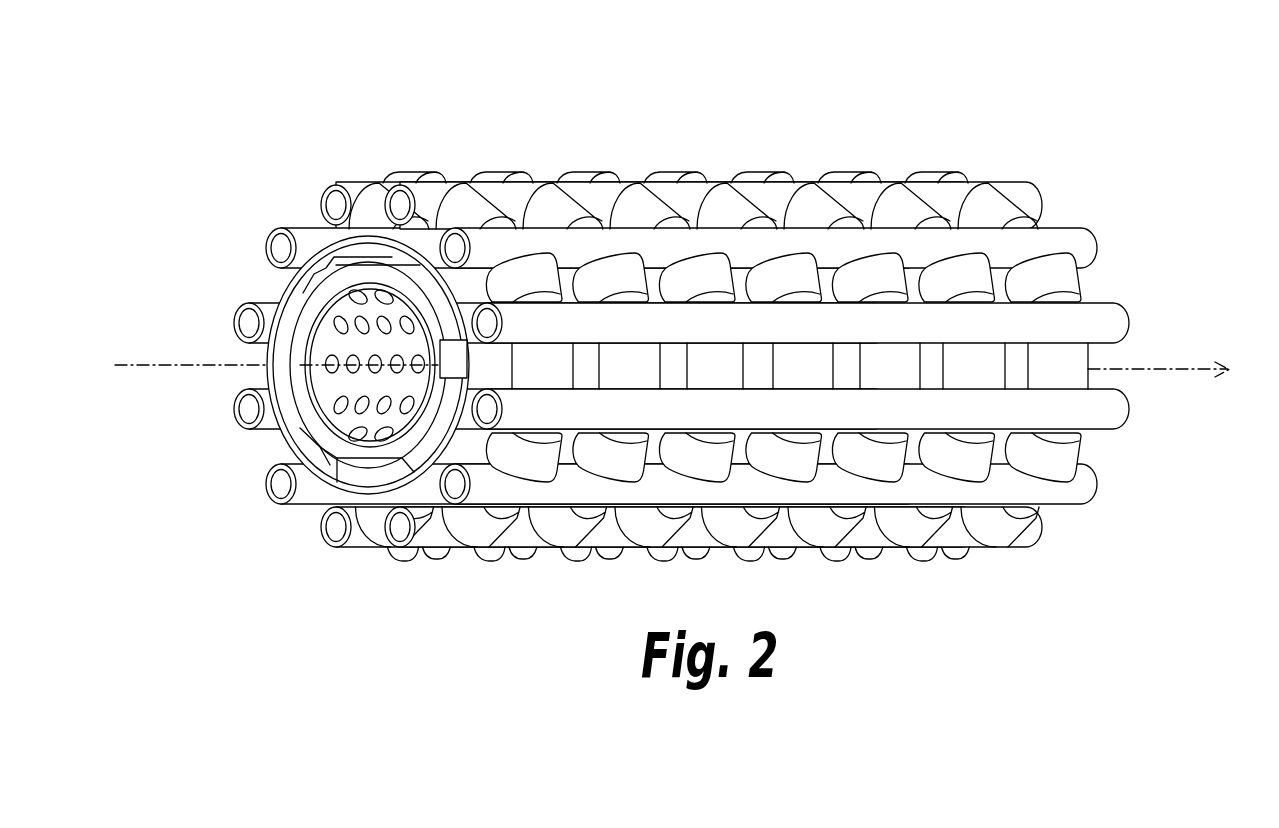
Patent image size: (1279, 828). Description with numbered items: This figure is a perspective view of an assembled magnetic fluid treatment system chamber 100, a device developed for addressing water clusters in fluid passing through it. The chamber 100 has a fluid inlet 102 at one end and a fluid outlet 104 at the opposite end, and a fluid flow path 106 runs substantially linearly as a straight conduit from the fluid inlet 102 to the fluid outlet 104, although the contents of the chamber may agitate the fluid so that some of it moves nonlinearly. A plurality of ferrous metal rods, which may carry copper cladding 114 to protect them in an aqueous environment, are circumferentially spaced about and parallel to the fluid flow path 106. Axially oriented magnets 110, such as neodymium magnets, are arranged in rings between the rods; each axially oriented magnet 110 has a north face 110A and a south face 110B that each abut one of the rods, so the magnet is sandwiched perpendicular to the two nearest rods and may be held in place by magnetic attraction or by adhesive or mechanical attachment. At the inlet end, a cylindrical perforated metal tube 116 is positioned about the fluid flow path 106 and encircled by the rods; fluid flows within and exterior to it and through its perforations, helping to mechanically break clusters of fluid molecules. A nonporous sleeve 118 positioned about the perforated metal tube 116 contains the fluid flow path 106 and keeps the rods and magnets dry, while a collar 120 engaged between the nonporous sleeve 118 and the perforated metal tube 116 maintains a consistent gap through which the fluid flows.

The magnetic fluid treatment system chamber 100 is at (685, 361).
The fluid inlet 102 is at (316, 345).
The fluid outlet 104 is at (1138, 353).
The fluid flow path 106 is at (685, 386).
The axially oriented magnet 110 is at (704, 306).
The north face 110A is at (627, 196).
The south face 110B is at (530, 196).
The copper cladding 114 is at (1080, 493).
The perforated metal tube 116 is at (324, 333).
The nonporous sleeve 118 is at (334, 256).
The collar 120 is at (300, 465).